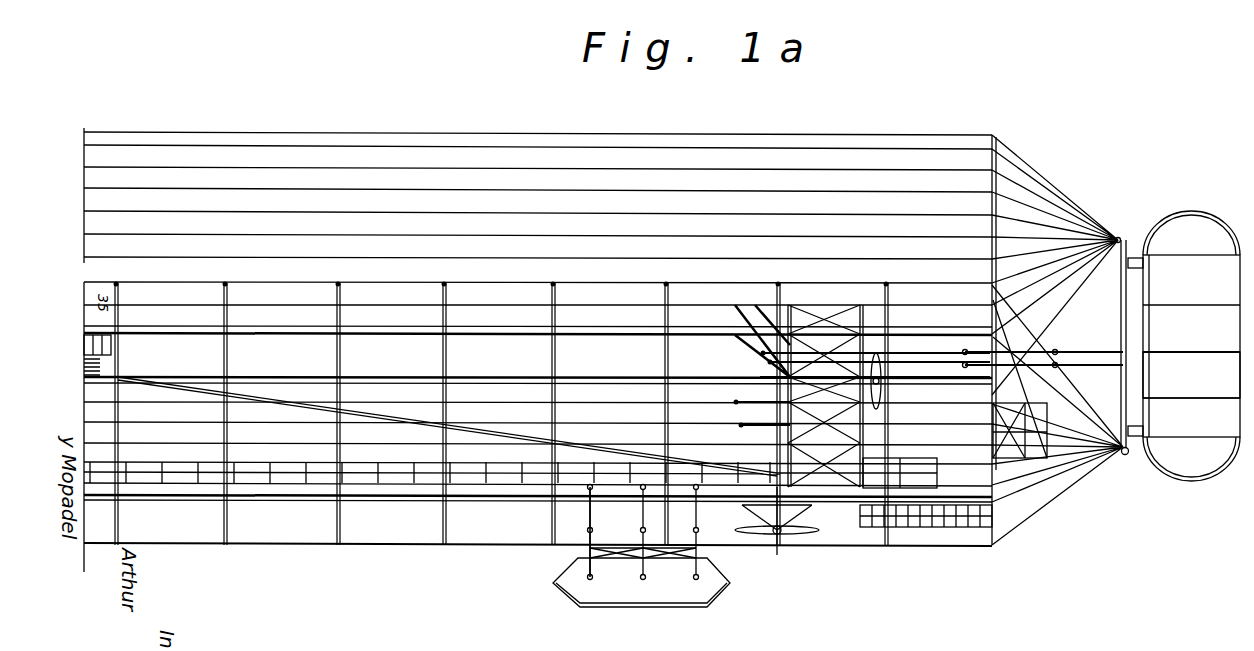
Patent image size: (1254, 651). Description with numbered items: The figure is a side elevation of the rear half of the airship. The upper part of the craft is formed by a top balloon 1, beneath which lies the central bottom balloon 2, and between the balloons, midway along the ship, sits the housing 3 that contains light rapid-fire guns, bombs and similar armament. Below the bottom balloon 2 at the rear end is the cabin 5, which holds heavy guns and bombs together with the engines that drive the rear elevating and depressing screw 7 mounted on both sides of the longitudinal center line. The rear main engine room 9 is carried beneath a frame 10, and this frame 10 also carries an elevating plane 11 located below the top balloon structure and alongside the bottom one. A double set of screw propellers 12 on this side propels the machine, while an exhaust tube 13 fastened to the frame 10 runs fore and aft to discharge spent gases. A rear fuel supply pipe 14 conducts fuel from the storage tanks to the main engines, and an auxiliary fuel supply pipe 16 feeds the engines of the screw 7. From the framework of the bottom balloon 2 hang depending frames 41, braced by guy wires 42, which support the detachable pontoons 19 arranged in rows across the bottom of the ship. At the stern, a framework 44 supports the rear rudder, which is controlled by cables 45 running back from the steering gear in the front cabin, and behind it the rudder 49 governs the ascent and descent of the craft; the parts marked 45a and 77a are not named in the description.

The top balloon 1 is at (485, 141).
The bottom balloon 2 is at (492, 394).
The housing 3 is at (108, 370).
The cabin 5 is at (952, 530).
The elevating and depressing screw 7 is at (770, 540).
The main engine room 9 is at (835, 485).
The frame 10 is at (780, 306).
The elevating plane 11 is at (828, 318).
The screw propeller 12 is at (760, 426).
The exhaust tube 13 is at (418, 480).
The fuel supply pipe 14 is at (262, 394).
The auxiliary fuel supply pipe 16 is at (858, 490).
The pontoon 19 is at (652, 600).
The depending frame 41 is at (582, 552).
The guy wire 42 is at (642, 506).
The framework 44 is at (1134, 364).
The cable 45 is at (1078, 362).
The rudder 45a is at (1191, 346).
The rudder 49 is at (1043, 430).
The rudder section 77a is at (1191, 375).